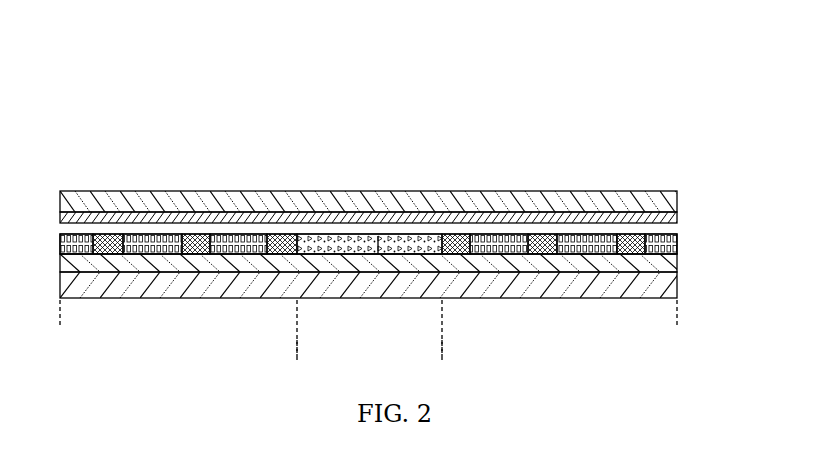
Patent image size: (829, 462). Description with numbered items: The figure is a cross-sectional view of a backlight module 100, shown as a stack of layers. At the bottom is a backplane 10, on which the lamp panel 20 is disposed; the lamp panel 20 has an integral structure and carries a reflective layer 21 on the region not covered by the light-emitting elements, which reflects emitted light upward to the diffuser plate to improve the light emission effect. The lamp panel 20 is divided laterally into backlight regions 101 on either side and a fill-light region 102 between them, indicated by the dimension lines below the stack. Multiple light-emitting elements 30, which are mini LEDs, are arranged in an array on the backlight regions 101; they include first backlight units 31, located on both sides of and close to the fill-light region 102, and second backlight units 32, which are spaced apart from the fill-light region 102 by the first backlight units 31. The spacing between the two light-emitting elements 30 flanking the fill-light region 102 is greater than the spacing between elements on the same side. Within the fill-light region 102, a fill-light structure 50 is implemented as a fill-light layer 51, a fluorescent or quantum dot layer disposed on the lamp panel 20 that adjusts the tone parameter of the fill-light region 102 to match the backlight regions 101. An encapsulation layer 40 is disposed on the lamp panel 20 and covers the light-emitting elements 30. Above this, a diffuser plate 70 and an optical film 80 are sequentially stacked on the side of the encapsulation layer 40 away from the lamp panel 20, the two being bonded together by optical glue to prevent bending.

The backlight module 100 is at (172, 94).
The optical film 80 is at (678, 203).
The diffuser plate 70 is at (678, 220).
The light-emitting elements 30 is at (292, 133).
The first backlight units 31 is at (281, 233).
The second backlight units 32 is at (193, 233).
The fill-light structure 50 is at (327, 236).
The fill-light layer 51 is at (378, 237).
The encapsulation layer 40 is at (497, 238).
The reflective layer 21 is at (573, 240).
The lamp panel 20 is at (678, 265).
The backplane 10 is at (678, 287).
The backlight regions 101 is at (677, 318).
The fill-light region 102 is at (442, 348).